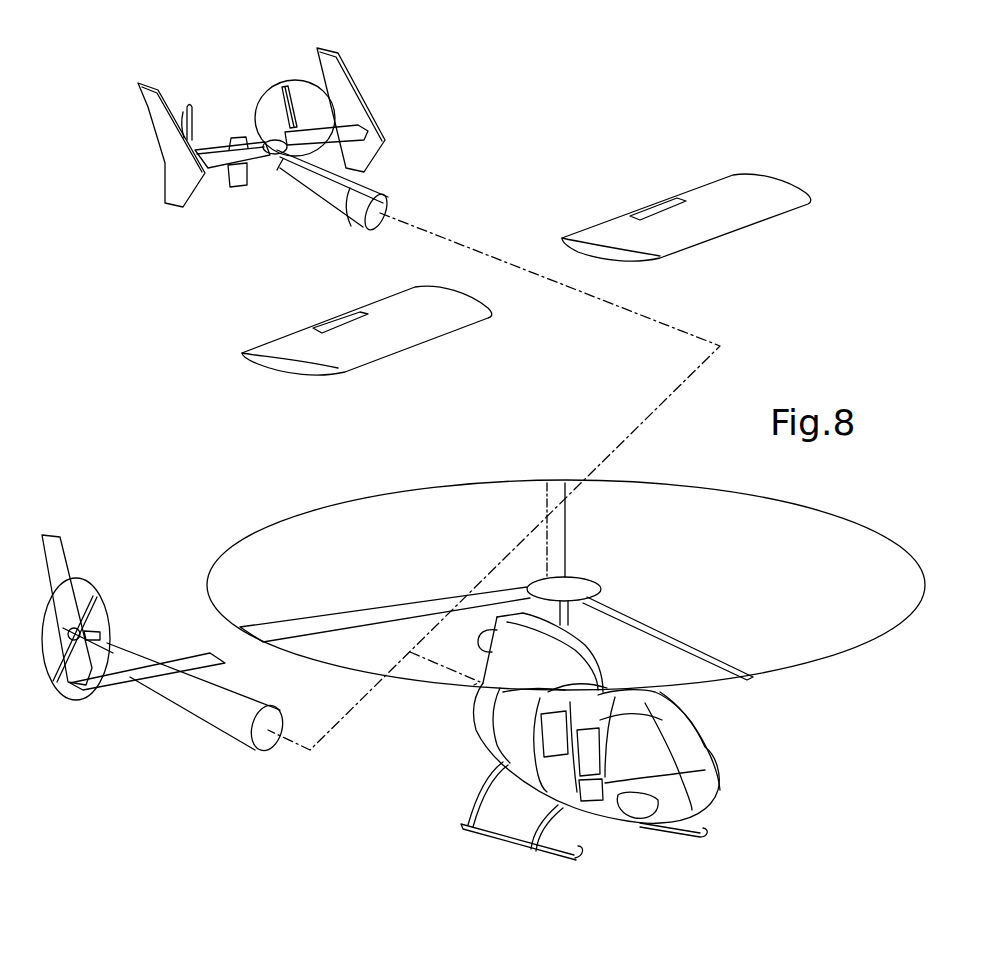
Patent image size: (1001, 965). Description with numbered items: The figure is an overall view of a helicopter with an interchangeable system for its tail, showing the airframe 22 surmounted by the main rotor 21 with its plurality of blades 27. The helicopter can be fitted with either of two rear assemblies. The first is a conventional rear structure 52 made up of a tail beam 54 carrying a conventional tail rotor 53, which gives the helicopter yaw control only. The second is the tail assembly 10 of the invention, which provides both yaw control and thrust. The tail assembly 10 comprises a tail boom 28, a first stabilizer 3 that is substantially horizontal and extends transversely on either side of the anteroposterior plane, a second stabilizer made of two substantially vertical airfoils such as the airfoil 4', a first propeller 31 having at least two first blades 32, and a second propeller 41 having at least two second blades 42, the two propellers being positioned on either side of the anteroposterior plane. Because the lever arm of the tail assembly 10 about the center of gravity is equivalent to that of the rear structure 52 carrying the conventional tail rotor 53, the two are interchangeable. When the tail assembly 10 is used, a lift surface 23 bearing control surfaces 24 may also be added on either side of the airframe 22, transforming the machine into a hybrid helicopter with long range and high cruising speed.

The tail assembly 10 is at (261, 151).
The first stabilizer 3 is at (275, 132).
The first propeller 31 is at (267, 90).
The first blades 32 is at (295, 93).
The airfoil 4' is at (370, 110).
The second propeller 41 is at (197, 128).
The second blades 42 is at (190, 103).
The tail boom 28 is at (323, 197).
The lift surface 23 is at (435, 320).
The control surfaces 24 is at (320, 322).
The airframe 22 is at (566, 670).
The main rotor 21 is at (573, 593).
The blades 27 is at (688, 650).
The rear structure 52 is at (164, 691).
The conventional tail rotor 53 is at (110, 620).
The tail beam 54 is at (203, 702).